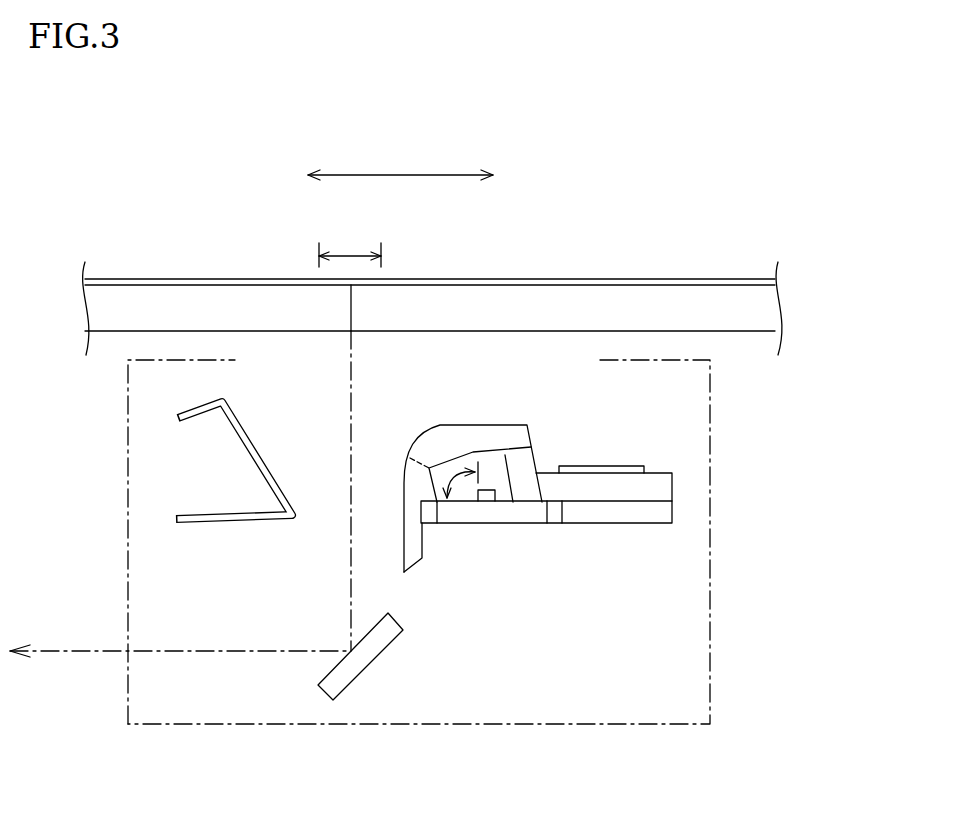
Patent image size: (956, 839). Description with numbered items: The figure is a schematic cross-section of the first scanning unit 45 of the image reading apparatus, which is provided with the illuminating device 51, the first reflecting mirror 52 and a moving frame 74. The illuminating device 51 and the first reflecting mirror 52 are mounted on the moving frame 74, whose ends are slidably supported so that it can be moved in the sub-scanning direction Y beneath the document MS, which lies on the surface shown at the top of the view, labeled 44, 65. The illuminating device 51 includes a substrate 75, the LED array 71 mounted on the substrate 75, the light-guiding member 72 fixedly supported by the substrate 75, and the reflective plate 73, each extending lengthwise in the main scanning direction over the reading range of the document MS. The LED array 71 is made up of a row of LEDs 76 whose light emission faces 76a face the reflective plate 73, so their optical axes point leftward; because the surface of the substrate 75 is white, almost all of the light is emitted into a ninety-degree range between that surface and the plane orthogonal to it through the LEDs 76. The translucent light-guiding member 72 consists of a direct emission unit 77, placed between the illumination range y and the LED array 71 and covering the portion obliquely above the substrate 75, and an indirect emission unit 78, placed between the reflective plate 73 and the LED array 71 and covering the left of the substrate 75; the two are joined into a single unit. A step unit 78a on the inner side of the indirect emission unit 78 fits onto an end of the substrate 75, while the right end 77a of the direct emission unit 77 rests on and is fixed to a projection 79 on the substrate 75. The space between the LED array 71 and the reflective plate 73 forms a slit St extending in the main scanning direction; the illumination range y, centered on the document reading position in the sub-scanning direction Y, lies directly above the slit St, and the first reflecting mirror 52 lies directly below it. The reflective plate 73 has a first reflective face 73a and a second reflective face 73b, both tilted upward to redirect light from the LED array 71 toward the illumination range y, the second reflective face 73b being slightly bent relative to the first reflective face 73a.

The sub-scanning direction Y is at (402, 175).
The illumination range y is at (350, 256).
The document MS is at (542, 278).
The rail 44 is at (432, 281).
The rail member 65 is at (672, 300).
The reflective plate 73 is at (247, 466).
The first reflective face 73a is at (247, 425).
The second reflective face 73b is at (230, 395).
The slit St is at (332, 518).
The first reflecting mirror 52 is at (362, 677).
The moving frame 74 is at (711, 640).
The indirect emission unit 78 is at (402, 455).
The step unit 78a is at (423, 513).
The direct emission unit 77 is at (500, 415).
The right end 77a is at (533, 442).
The light-guiding member 72 is at (513, 423).
The LED array 71 is at (492, 485).
The substrate 75 is at (530, 513).
The illuminating device 51 is at (645, 433).
The projection 79 is at (530, 487).
The LED 76 is at (487, 501).
The light emission face 76a is at (467, 501).
The first scanning unit 45 is at (540, 735).